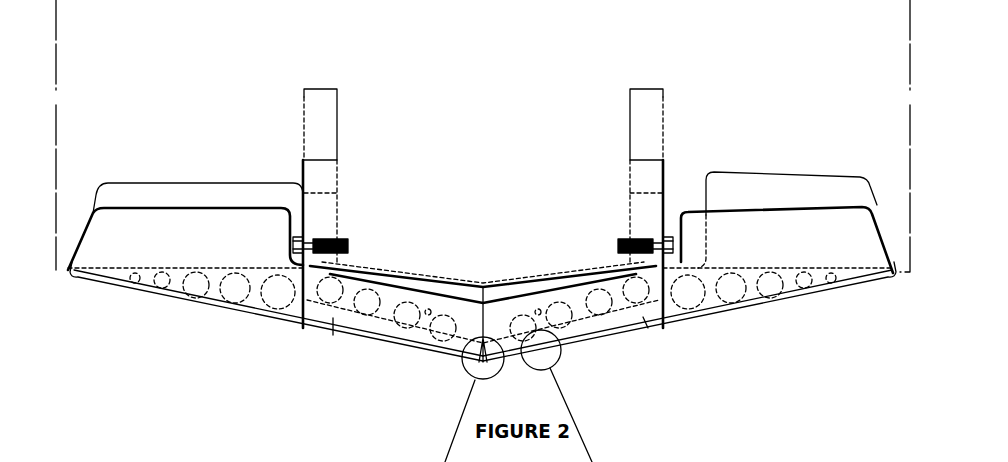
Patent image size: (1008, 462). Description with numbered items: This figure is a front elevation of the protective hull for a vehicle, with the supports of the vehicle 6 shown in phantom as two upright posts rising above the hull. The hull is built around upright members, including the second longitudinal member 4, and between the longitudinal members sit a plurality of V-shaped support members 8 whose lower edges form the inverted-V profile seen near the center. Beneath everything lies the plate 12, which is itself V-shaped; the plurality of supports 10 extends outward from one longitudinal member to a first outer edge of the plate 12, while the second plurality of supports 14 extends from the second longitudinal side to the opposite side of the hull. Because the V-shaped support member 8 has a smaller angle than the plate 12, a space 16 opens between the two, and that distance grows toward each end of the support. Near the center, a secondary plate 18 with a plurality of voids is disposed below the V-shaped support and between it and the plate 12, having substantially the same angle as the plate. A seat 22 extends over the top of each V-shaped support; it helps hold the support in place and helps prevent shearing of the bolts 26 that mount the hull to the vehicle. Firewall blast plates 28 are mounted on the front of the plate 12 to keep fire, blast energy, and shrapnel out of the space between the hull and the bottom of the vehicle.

The second longitudinal member 4 is at (665, 245).
The vehicle 6 is at (328, 138).
The V-shaped support member 8 is at (393, 298).
The plurality of supports 10 is at (214, 295).
The plate 12 is at (290, 327).
The second plurality of supports 14 is at (753, 283).
The space 16 is at (333, 320).
The secondary plate 18 is at (420, 350).
The seat 22 is at (340, 262).
The bolts 26 is at (335, 240).
The firewall blast plates 28 is at (157, 248).